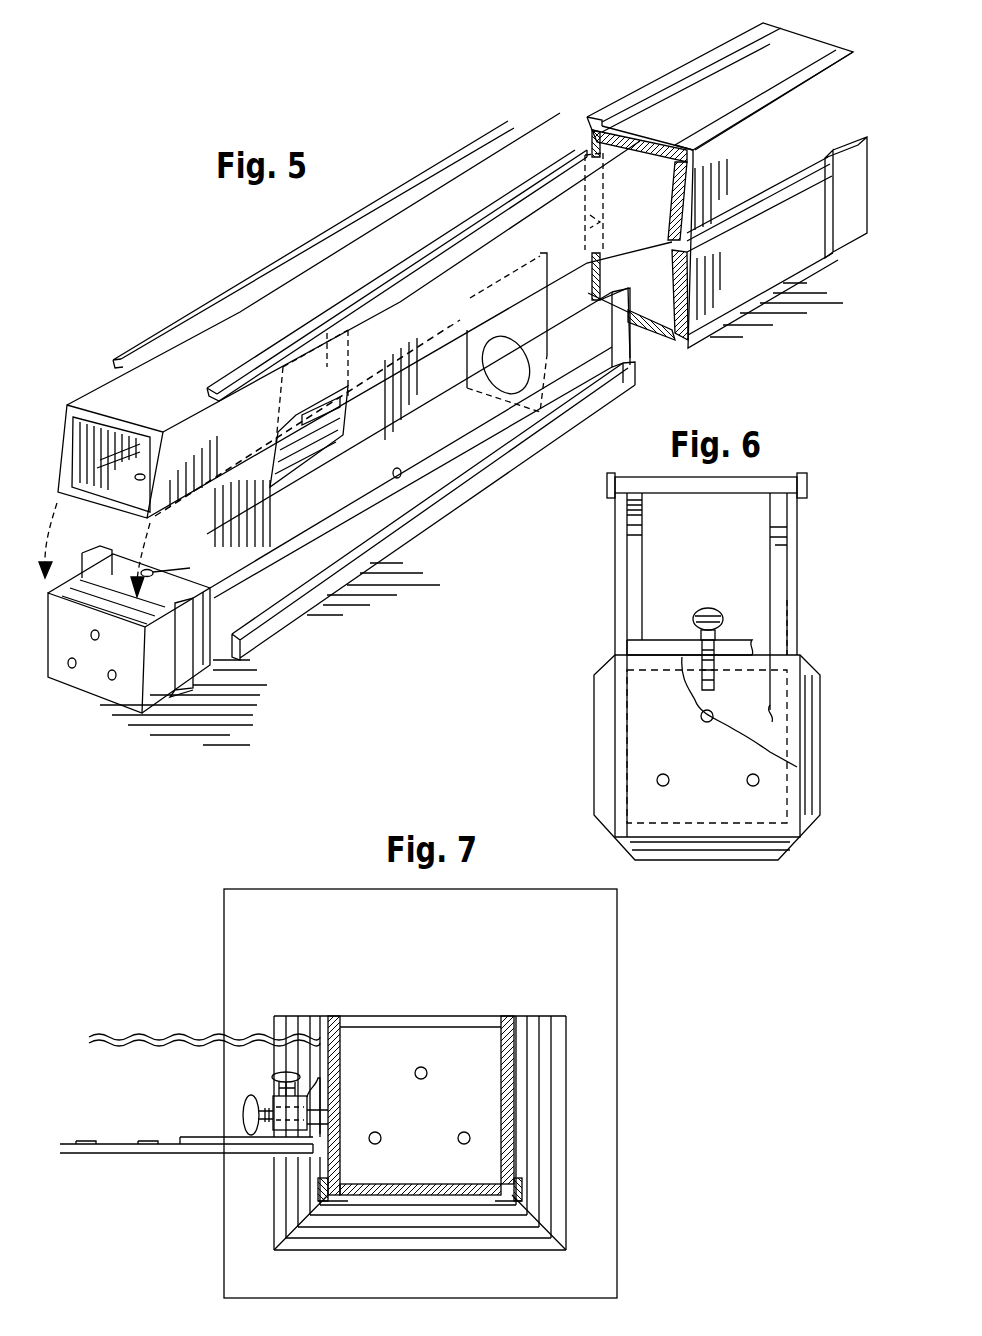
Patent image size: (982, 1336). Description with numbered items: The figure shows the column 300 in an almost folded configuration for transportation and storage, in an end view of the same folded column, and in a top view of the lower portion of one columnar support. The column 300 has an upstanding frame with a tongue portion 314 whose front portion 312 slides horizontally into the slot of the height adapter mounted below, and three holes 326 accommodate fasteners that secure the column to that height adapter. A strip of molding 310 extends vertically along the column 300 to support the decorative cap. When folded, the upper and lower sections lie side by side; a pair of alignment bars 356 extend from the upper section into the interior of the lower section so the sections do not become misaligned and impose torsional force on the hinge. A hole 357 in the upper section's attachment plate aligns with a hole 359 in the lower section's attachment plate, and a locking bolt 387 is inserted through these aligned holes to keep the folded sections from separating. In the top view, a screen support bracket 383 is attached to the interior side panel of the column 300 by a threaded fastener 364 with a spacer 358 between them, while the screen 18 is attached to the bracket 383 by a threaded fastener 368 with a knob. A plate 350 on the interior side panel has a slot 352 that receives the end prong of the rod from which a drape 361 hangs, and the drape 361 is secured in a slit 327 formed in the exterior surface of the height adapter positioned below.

In FIG. 5, the column 300 is at (470, 110).
In FIG. 6, the column 300 is at (786, 443).
In FIG. 7, the column 300 is at (436, 1196).
In FIG. 5, the strip of molding 310 is at (250, 362).
In FIG. 7, the strip of molding 310 is at (519, 1190).
In FIG. 6, the front portion 312 is at (747, 853).
In FIG. 5, the tongue portion 314 is at (200, 647).
In FIG. 6, the tongue portion 314 is at (815, 797).
In FIG. 5, the holes 326 is at (95, 640).
In FIG. 6, the holes 326 is at (707, 722).
In FIG. 7, the holes 326 is at (382, 1137).
In FIG. 7, the slit 327 is at (338, 1038).
In FIG. 5, the plate 350 is at (300, 420).
In FIG. 5, the slot 352 is at (345, 405).
In FIG. 5, the alignment bars 356 is at (278, 345).
In FIG. 6, the alignment bars 356 is at (633, 703).
In FIG. 5, the hole 357 is at (137, 477).
In FIG. 6, the hole 357 is at (716, 638).
In FIG. 7, the spacer 358 is at (312, 1090).
In FIG. 5, the hole 359 is at (215, 583).
In FIG. 6, the hole 359 is at (717, 673).
In FIG. 7, the drape 361 is at (120, 1043).
In FIG. 7, the threaded fastener 364 is at (243, 1111).
In FIG. 7, the threaded fastener 368 is at (288, 1072).
In FIG. 7, the screen support bracket 383 is at (277, 1132).
In FIG. 6, the locking bolt 387 is at (712, 608).
In FIG. 7, the screen 18 is at (116, 1155).